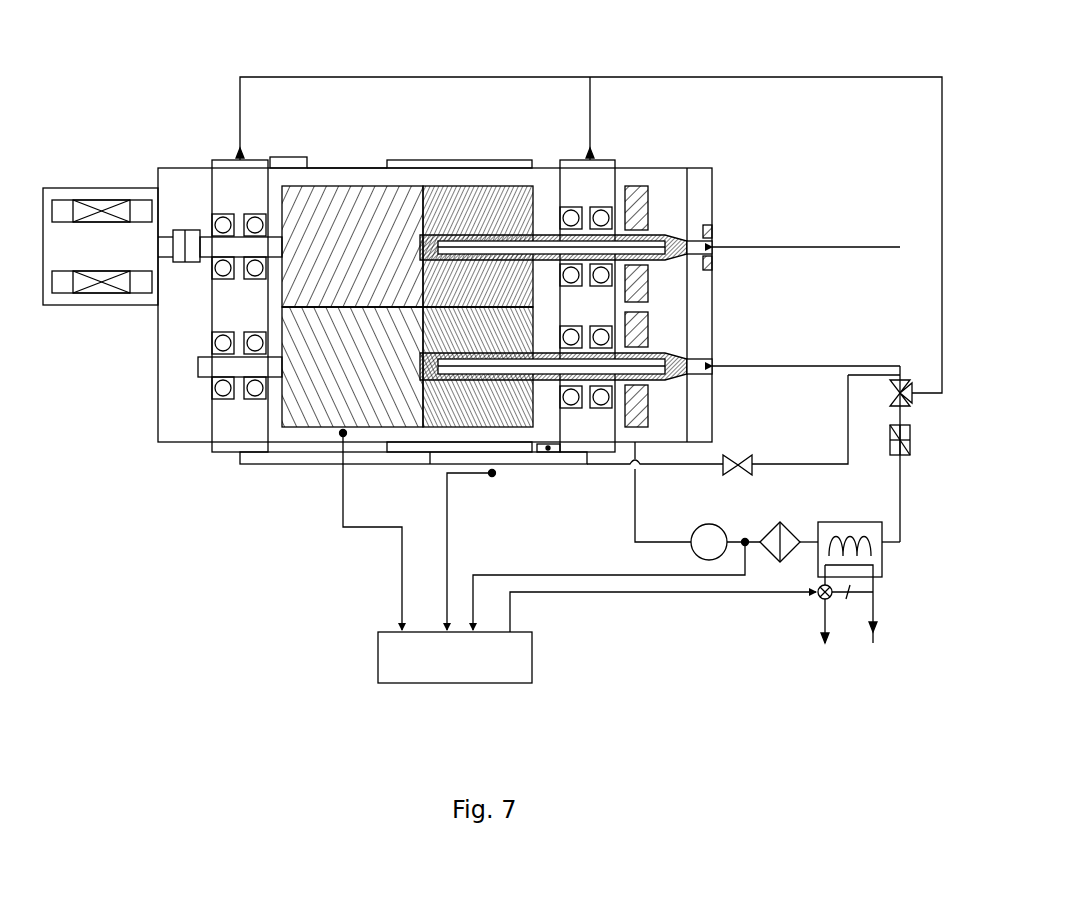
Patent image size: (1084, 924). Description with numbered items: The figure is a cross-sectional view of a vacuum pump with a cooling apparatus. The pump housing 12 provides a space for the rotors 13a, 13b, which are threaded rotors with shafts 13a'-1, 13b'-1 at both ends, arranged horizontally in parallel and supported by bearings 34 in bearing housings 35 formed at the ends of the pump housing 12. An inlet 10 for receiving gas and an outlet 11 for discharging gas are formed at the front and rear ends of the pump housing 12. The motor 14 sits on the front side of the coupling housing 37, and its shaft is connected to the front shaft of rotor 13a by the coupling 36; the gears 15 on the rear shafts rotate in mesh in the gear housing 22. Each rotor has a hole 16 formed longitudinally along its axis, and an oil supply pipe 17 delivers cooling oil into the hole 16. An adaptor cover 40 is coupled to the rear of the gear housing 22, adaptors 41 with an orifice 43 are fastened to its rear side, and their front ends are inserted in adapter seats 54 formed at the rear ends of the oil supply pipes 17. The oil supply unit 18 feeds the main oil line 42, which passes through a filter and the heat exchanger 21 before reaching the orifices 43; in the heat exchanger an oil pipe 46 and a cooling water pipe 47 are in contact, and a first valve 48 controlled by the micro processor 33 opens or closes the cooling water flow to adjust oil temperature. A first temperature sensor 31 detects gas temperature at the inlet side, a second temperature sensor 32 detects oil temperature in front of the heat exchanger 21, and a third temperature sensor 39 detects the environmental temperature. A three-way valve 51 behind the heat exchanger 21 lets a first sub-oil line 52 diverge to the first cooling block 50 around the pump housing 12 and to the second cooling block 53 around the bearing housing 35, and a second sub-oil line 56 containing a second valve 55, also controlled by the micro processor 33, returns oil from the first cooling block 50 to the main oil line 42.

The inlet 10 is at (296, 158).
The outlet 11 is at (545, 452).
The pump housing 12 is at (372, 168).
The rotor 13a is at (352, 206).
The rotor 13b is at (334, 397).
The shaft 13a'-1 is at (498, 219).
The shaft 13b'-1 is at (505, 433).
The motor 14 is at (100, 188).
The gears 15 is at (653, 190).
The hole 16 is at (428, 237).
The oil supply pipe 17 is at (473, 243).
The oil supply unit 18 is at (797, 486).
The heat exchanger 21 is at (836, 522).
The gear housing 22 is at (672, 445).
The first temperature sensor 31 is at (338, 437).
The second temperature sensor 32 is at (722, 530).
The micro processor 33 is at (532, 664).
The bearings 34 is at (244, 213).
The bearing housing 35 is at (214, 162).
The coupling 36 is at (183, 230).
The coupling housing 37 is at (180, 168).
The third temperature sensor 39 is at (492, 477).
The adaptor cover 40 is at (712, 296).
The adaptor 41 is at (713, 256).
The main oil line 42 is at (905, 520).
The orifice 43 is at (713, 236).
The oil pipe 46 is at (850, 522).
The cooling water pipe 47 is at (880, 566).
The first valve 48 is at (818, 598).
The first cooling block 50 is at (500, 160).
The 3-way valve 51 is at (915, 405).
The first sub-oil line 52 is at (722, 77).
The second cooling block 53 is at (222, 168).
The adapter seat 54 is at (692, 393).
The second valve 55 is at (745, 462).
The second sub-oil line 56 is at (640, 470).